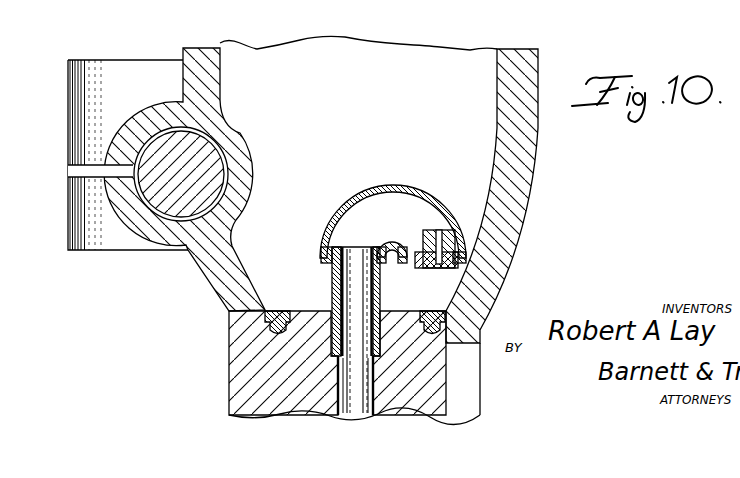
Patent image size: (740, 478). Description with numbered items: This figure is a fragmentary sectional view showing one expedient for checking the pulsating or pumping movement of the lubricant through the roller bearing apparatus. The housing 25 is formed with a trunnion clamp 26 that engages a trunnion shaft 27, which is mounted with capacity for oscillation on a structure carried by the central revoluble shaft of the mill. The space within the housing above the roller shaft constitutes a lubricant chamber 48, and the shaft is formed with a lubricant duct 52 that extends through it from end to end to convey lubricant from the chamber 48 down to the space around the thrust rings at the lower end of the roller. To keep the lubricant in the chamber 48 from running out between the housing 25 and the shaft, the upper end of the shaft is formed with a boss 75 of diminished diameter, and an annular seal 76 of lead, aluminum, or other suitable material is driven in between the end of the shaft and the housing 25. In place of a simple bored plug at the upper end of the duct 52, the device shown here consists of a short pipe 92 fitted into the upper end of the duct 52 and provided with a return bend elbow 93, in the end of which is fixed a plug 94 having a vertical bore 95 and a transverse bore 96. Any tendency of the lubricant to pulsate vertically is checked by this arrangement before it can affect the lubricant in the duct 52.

The housing 25 is at (513, 97).
The trunnion clamp 26 is at (143, 121).
The trunnion shaft 27 is at (170, 177).
The lubricant chamber 48 is at (413, 108).
The lubricant duct 52 is at (360, 388).
The boss 75 is at (303, 337).
The annular seal 76 is at (447, 319).
The short pipe 92 is at (380, 290).
The return bend elbow 93 is at (432, 203).
The plug 94 is at (460, 256).
The vertical bore 95 is at (442, 240).
The transverse bore 96 is at (425, 233).